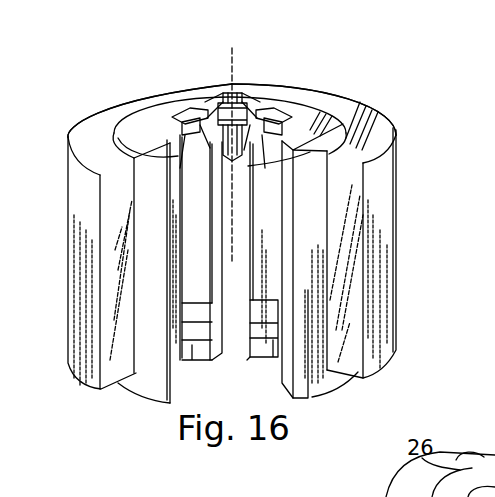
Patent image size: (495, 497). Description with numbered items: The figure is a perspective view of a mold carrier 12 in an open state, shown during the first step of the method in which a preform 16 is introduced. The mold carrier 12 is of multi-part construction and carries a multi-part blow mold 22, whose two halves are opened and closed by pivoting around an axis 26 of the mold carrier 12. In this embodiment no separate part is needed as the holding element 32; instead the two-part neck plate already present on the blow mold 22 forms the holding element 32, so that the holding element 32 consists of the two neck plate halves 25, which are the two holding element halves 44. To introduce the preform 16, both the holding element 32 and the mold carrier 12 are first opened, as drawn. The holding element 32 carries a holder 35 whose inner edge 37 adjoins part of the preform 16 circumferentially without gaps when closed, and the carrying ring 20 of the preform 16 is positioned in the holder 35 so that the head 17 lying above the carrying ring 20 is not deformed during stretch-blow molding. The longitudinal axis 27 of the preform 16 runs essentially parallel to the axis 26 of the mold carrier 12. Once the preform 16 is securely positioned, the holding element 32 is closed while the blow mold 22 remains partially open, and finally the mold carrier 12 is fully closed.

The mold carrier 12 is at (408, 80).
The preform 16 is at (245, 150).
The head 17 is at (245, 105).
The carrying ring 20 is at (255, 145).
The blow mold 22 is at (195, 282).
The neck plate halves 25 is at (168, 126).
The axis 26 is at (238, 99).
The longitudinal axis 27 is at (230, 62).
The holding element 32 is at (190, 108).
The holder 35 is at (175, 106).
The inner edge 37 is at (368, 116).
The holding element halves 44 is at (68, 136).